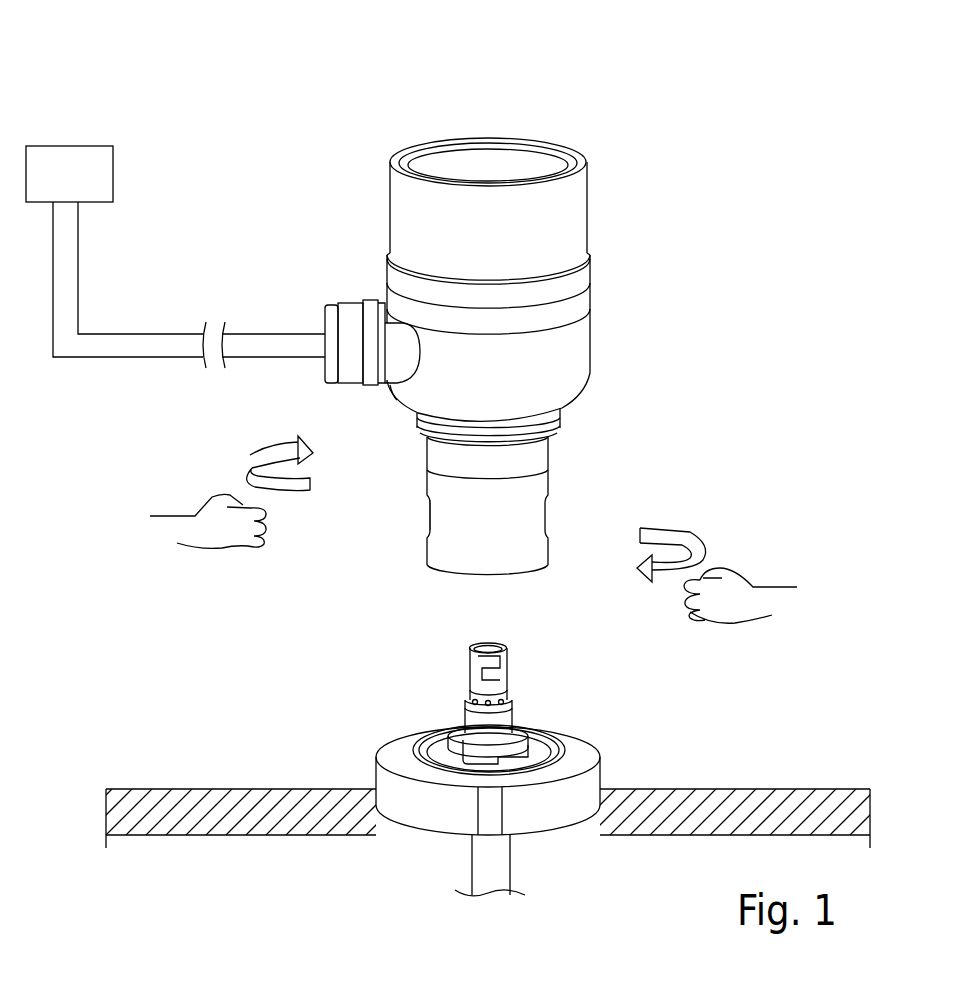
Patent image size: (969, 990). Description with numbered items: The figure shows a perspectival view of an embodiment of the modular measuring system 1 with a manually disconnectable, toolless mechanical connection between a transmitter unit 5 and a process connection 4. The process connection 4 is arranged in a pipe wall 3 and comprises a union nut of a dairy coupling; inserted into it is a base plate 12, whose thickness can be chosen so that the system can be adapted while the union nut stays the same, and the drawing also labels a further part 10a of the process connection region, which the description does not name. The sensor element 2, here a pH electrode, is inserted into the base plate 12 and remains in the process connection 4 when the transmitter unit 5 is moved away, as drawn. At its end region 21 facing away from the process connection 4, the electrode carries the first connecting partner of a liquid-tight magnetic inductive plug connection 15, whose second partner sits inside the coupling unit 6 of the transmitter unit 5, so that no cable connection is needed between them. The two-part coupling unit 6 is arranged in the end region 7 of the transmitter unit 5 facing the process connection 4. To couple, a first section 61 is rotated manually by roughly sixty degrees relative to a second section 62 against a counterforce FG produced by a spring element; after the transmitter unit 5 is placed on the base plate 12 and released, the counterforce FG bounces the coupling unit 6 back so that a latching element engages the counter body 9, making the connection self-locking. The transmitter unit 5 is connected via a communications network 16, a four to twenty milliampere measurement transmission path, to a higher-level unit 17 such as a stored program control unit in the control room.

The measuring system 1 is at (676, 97).
The sensor element 2 is at (492, 866).
The pipe wall 3 is at (176, 789).
The process connection 4 is at (355, 764).
The transmitter unit 5 is at (692, 286).
The coupling unit 6 is at (580, 487).
The end region 7 is at (580, 447).
The counter body 9 is at (547, 758).
The inner ring of mount 10a is at (440, 745).
The base plate 12 is at (527, 748).
The magnetic inductive plug connection 15 is at (505, 692).
The communications network 16 is at (125, 315).
The higher-level unit 17 is at (54, 191).
The end region 21 is at (448, 663).
The first section 61 is at (550, 552).
The second section 62 is at (442, 453).
The counterforce FG is at (255, 455).